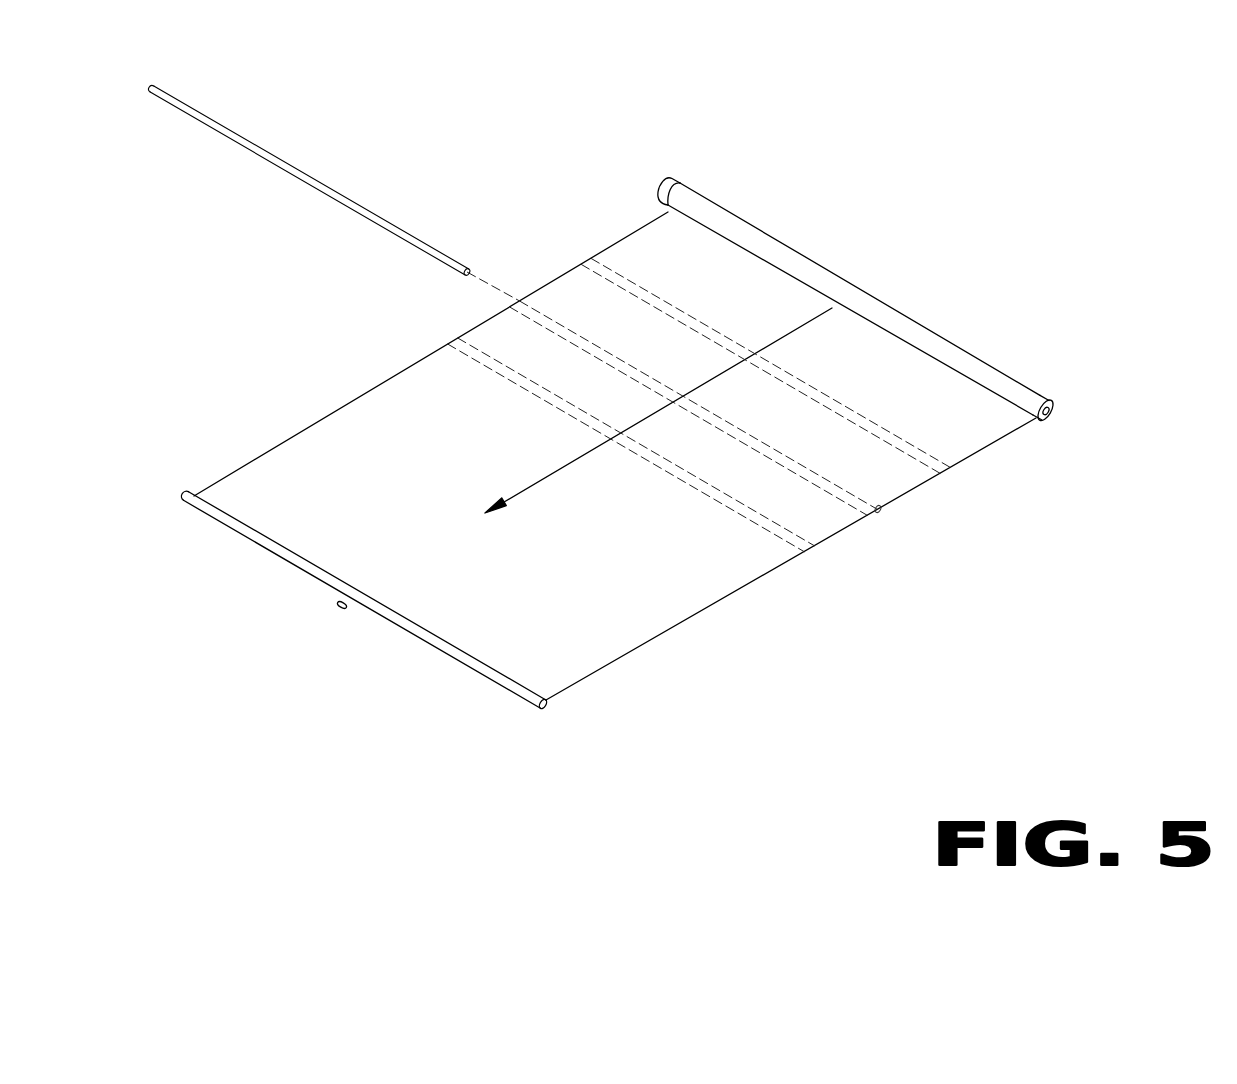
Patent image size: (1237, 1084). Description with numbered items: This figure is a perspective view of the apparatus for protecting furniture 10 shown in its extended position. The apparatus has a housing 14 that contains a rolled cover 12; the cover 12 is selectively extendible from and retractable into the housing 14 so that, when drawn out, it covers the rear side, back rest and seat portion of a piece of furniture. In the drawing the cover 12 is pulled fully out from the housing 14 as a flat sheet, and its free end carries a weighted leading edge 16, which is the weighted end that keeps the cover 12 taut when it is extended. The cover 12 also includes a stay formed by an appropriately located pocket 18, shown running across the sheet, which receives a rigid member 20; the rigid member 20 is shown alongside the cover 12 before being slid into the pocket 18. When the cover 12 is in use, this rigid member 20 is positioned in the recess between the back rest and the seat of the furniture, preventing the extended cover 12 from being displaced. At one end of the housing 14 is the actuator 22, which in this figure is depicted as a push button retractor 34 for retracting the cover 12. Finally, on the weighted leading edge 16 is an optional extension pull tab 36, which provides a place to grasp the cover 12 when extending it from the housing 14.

The apparatus for protecting furniture 10 is at (1047, 148).
The cover 12 is at (722, 543).
The housing 14 is at (857, 354).
The weighted leading edge 16 is at (364, 621).
The pocket 18 is at (570, 333).
The rigid member 20 is at (312, 178).
The actuator 22 is at (1051, 422).
The push button retractor 34 is at (1043, 397).
The extension pull tab 36 is at (340, 605).